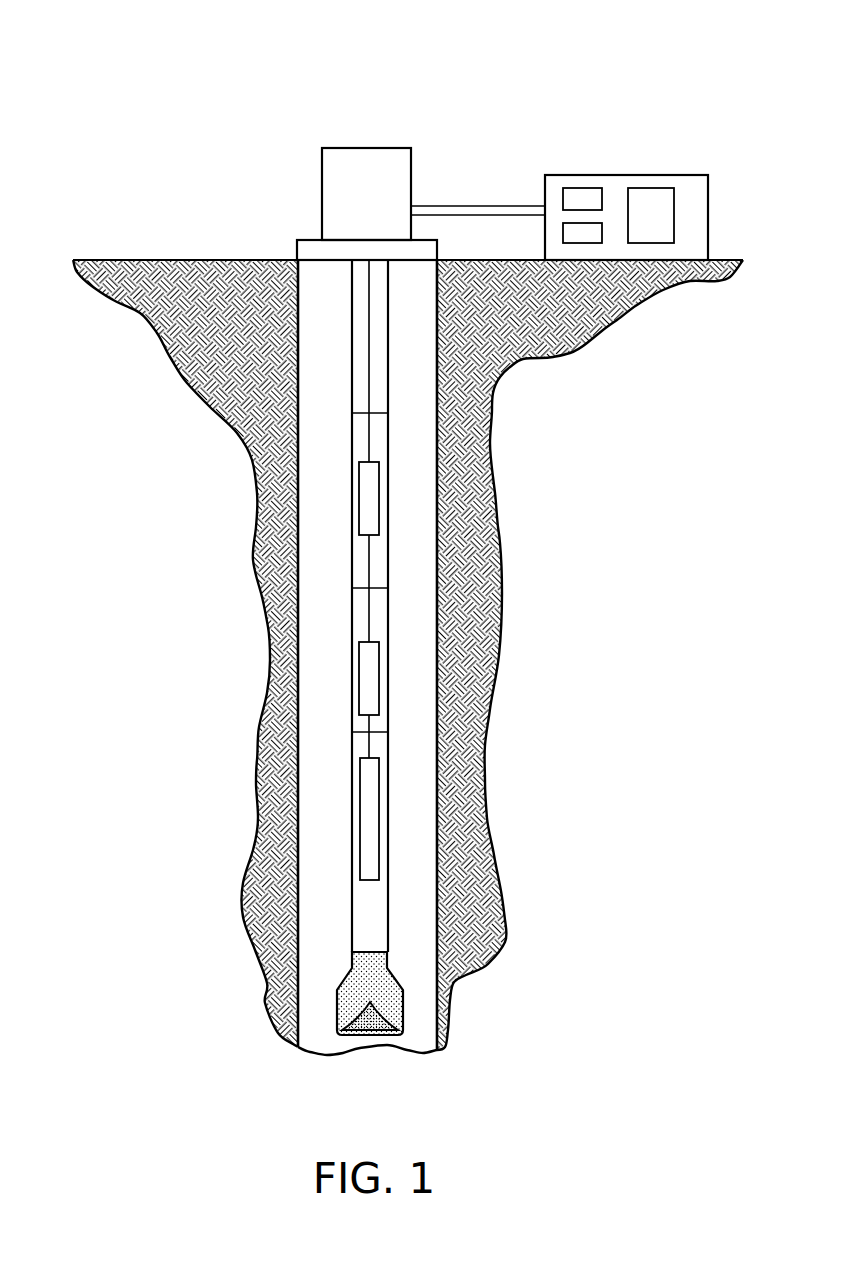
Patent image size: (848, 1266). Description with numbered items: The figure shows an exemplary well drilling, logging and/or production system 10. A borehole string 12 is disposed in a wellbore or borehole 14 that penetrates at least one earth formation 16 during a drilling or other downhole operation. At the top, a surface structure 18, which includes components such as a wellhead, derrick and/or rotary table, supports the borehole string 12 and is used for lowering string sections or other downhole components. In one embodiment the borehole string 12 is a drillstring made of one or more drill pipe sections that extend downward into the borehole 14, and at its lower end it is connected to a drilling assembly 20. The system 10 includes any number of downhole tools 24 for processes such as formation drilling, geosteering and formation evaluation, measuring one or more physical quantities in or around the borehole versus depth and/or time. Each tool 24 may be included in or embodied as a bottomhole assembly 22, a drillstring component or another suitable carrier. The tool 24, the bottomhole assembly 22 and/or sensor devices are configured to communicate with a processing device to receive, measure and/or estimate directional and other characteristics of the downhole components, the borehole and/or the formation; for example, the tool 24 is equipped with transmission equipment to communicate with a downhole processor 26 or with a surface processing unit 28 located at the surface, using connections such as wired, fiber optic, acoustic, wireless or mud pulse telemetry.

The well drilling, logging and/or production system 10 is at (113, 109).
The borehole string 12 is at (352, 588).
The borehole 14 is at (417, 555).
The earth formation 16 is at (218, 372).
The surface structure 18 is at (368, 148).
The drilling assembly 20 is at (390, 952).
The bottomhole assembly 22 is at (417, 903).
The downhole tool 24 is at (379, 686).
The downhole processor 26 is at (379, 485).
The surface processing unit 28 is at (683, 175).